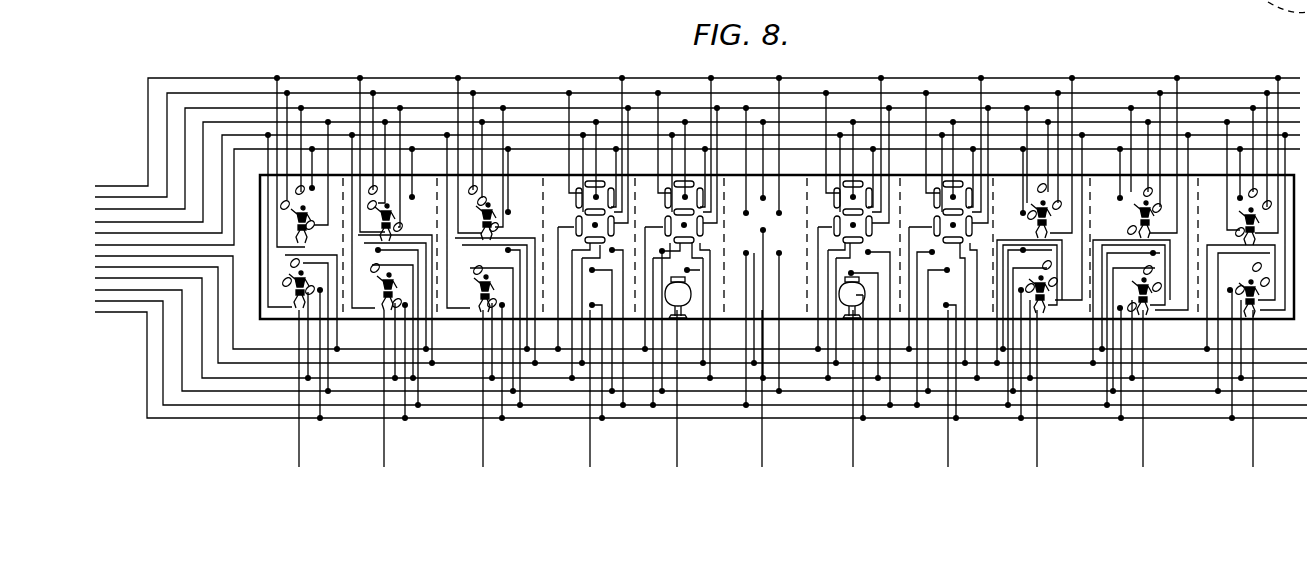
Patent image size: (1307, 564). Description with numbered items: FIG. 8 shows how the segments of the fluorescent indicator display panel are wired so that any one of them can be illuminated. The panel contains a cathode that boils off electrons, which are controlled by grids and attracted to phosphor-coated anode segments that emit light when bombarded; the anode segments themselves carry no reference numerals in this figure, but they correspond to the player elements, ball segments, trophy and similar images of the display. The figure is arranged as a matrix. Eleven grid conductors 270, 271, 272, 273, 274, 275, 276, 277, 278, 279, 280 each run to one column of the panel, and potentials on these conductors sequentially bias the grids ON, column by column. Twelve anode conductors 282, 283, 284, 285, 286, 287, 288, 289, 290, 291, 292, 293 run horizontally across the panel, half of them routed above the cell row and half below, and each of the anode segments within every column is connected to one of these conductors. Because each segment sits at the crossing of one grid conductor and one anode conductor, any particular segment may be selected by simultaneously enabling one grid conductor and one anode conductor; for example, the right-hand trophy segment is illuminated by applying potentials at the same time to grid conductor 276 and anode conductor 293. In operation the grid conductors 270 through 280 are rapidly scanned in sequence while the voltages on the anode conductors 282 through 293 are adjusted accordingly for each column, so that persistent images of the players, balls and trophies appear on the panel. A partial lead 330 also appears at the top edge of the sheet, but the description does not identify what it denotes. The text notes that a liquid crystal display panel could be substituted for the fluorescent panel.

The grid conductor 270 is at (297, 451).
The grid conductor 271 is at (382, 451).
The grid conductor 272 is at (481, 451).
The grid conductor 273 is at (588, 451).
The grid conductor 274 is at (675, 451).
The grid conductor 275 is at (760, 451).
The grid conductor 276 is at (851, 451).
The grid conductor 277 is at (946, 451).
The grid conductor 278 is at (1034, 451).
The grid conductor 279 is at (1140, 451).
The grid conductor 280 is at (1250, 451).
The anode conductor 282 is at (318, 77).
The anode conductor 283 is at (263, 93).
The anode conductor 284 is at (232, 107).
The anode conductor 285 is at (203, 128).
The anode conductor 286 is at (220, 145).
The anode conductor 287 is at (140, 232).
The anode conductor 288 is at (140, 232).
The anode conductor 289 is at (217, 297).
The anode conductor 290 is at (200, 342).
The anode conductor 291 is at (180, 378).
The anode conductor 292 is at (162, 398).
The anode conductor 293 is at (177, 420).
The lead 330 is at (988, 13).